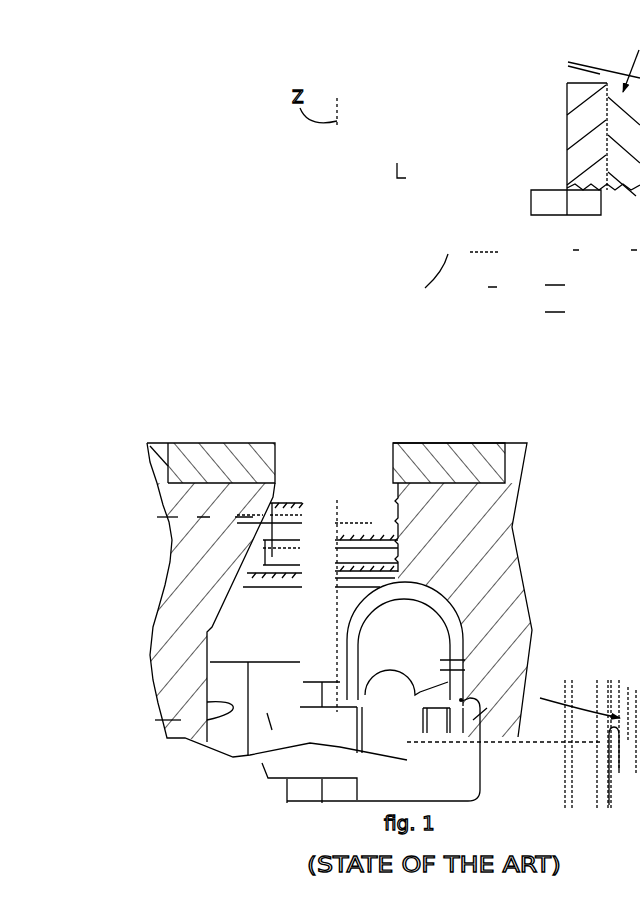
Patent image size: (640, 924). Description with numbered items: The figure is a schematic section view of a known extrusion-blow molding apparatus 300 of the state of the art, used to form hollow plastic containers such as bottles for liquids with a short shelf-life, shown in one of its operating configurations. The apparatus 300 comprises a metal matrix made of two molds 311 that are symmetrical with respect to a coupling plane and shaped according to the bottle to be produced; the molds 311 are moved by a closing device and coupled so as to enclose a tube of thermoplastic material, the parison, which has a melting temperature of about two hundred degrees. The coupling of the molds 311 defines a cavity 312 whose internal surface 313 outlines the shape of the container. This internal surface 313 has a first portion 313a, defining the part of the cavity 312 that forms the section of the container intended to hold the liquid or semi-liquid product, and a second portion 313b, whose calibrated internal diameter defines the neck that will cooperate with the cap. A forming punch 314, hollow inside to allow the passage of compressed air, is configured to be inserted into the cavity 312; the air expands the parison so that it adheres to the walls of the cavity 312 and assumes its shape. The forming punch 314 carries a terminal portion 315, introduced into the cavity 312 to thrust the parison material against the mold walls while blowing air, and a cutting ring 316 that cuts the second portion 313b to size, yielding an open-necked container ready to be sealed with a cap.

The apparatus 300 is at (518, 206).
The mold 311 is at (505, 498).
The cavity 312 is at (507, 398).
The internal surface 313 is at (231, 607).
The first portion 313a is at (126, 722).
The second portion 313b is at (134, 517).
The forming punch 314 is at (487, 251).
The terminal portion 315 is at (496, 325).
The cutting ring 316 is at (405, 176).